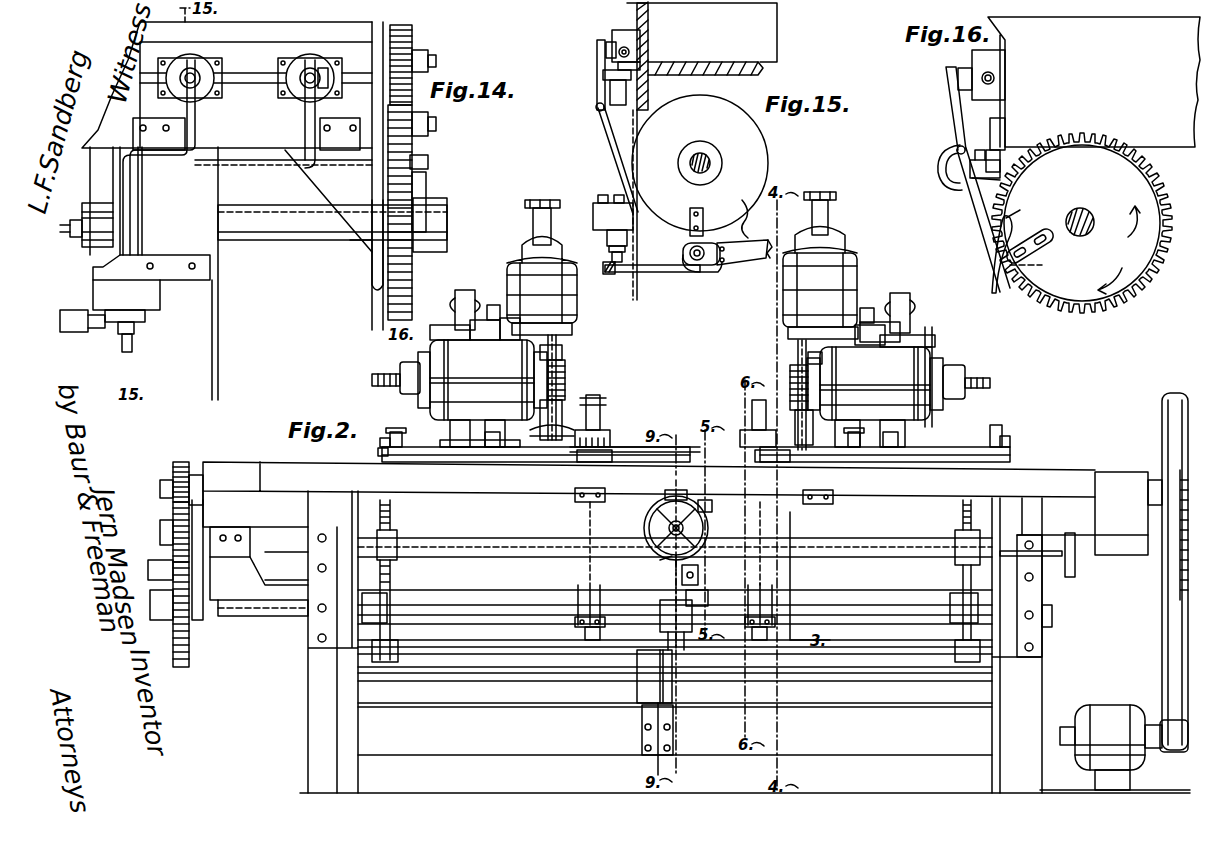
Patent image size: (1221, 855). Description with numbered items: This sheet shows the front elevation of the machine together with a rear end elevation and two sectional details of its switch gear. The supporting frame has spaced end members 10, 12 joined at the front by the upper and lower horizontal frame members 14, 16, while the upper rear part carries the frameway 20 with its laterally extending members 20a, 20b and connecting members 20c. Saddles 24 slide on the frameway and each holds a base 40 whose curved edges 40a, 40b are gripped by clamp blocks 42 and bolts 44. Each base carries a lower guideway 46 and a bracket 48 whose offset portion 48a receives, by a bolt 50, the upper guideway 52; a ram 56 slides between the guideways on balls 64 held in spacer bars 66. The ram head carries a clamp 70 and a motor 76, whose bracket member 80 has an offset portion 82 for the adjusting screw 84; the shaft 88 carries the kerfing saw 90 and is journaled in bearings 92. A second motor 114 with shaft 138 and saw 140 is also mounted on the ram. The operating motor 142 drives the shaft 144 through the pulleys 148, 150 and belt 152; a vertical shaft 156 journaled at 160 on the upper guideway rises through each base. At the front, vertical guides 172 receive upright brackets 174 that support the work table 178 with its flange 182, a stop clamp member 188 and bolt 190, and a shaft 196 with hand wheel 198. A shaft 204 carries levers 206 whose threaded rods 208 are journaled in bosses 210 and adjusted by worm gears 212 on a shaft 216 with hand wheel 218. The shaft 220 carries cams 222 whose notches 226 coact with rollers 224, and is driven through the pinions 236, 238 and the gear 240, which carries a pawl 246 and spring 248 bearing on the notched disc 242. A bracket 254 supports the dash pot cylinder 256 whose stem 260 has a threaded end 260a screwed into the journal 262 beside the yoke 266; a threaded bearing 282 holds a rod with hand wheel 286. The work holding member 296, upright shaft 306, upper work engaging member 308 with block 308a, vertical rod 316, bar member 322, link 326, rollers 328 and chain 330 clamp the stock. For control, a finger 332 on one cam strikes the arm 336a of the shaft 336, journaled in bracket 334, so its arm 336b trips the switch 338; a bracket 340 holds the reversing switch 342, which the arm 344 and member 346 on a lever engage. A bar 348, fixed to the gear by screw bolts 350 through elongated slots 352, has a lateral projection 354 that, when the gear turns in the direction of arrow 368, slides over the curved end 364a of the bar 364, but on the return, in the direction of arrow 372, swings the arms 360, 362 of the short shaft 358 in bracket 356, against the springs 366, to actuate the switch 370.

In FIG. 14, the frame end member 10 is at (128, 336).
In FIG. 2, the frame end member 10 is at (333, 642).
In FIG. 2, the frame end member 12 is at (1017, 645).
In FIG. 2, the upper horizontal frame member 14 is at (828, 567).
In FIG. 2, the lower horizontal frame member 16 is at (745, 748).
In FIG. 14, the frameway 20 is at (300, 120).
In FIG. 15, the frameway 20 is at (648, 84).
In FIG. 16, the frameway 20 is at (1094, 82).
In FIG. 2, the frameway 20 is at (649, 491).
In FIG. 14, the laterally extending member 20a is at (120, 177).
In FIG. 15, the laterally extending member 20a is at (650, 38).
In FIG. 16, the laterally extending member 20a is at (1008, 62).
In FIG. 2, the laterally extending member 20b is at (874, 523).
In FIG. 15, the connecting member 20c is at (722, 68).
In FIG. 2, the saddle 24 is at (410, 470).
In FIG. 2, the base 40 is at (398, 445).
In FIG. 2, the curved edge 40a is at (572, 466).
In FIG. 2, the curved edge 40b is at (378, 452).
In FIG. 2, the clamp block 42 is at (1002, 436).
In FIG. 2, the bolt 44 is at (385, 438).
In FIG. 2, the lower guideway 46 is at (486, 448).
In FIG. 2, the bracket 48 is at (935, 350).
In FIG. 2, the offset portion 48a is at (465, 292).
In FIG. 2, the bolt 50 is at (476, 296).
In FIG. 2, the upper guideway 52 is at (470, 324).
In FIG. 2, the ram 56 is at (470, 346).
In FIG. 2, the ball 64 is at (475, 422).
In FIG. 2, the spacer bar 66 is at (936, 340).
In FIG. 2, the clamp 70 is at (512, 345).
In FIG. 2, the motor 76 is at (578, 290).
In FIG. 2, the bracket member 80 is at (554, 242).
In FIG. 2, the offset portion 82 is at (533, 220).
In FIG. 2, the adjusting screw 84 is at (530, 241).
In FIG. 2, the motor shaft 88 is at (562, 356).
In FIG. 2, the kerfing saw 90 is at (512, 470).
In FIG. 2, the bearing 92 is at (556, 404).
In FIG. 2, the motor 114 is at (568, 372).
In FIG. 2, the motor shaft 138 is at (372, 383).
In FIG. 2, the saw 140 is at (560, 405).
In FIG. 2, the operating motor 142 is at (1115, 747).
In FIG. 14, the shaft 144 is at (436, 66).
In FIG. 2, the shaft 144 is at (200, 476).
In FIG. 2, the pulley 148 is at (1160, 726).
In FIG. 2, the pulley 150 is at (1160, 590).
In FIG. 2, the belt 152 is at (1172, 642).
In FIG. 2, the shaft 156 is at (492, 306).
In FIG. 2, the journal 160 is at (692, 331).
In FIG. 2, the vertical guide 172 is at (320, 578).
In FIG. 2, the upright bracket 174 is at (334, 508).
In FIG. 2, the work table 178 is at (635, 444).
In FIG. 2, the flange 182 is at (665, 500).
In FIG. 2, the clamp member 188 is at (832, 504).
In FIG. 2, the bolt 190 is at (603, 505).
In FIG. 2, the shaft 196 is at (700, 498).
In FIG. 2, the hand wheel 198 is at (708, 528).
In FIG. 2, the shaft 204 is at (520, 681).
In FIG. 15, the lever 206 is at (745, 252).
In FIG. 2, the lever 206 is at (388, 690).
In FIG. 2, the threaded rod 208 is at (420, 628).
In FIG. 2, the boss 210 is at (398, 532).
In FIG. 2, the worm gear 212 is at (392, 542).
In FIG. 2, the shaft 216 is at (455, 553).
In FIG. 2, the hand wheel 218 is at (1075, 568).
In FIG. 14, the shaft 220 is at (447, 225).
In FIG. 15, the shaft 220 is at (702, 160).
In FIG. 16, the shaft 220 is at (1092, 214).
In FIG. 2, the shaft 220 is at (240, 616).
In FIG. 15, the cam 222 is at (700, 163).
In FIG. 2, the cam 222 is at (388, 600).
In FIG. 15, the roller 224 is at (700, 266).
In FIG. 15, the notch 226 is at (746, 212).
In FIG. 14, the pinion 236 is at (436, 126).
In FIG. 2, the pinion 236 is at (172, 508).
In FIG. 14, the pinion 238 is at (414, 40).
In FIG. 2, the pinion 238 is at (178, 464).
In FIG. 14, the gear 240 is at (414, 206).
In FIG. 16, the gear 240 is at (1142, 276).
In FIG. 2, the gear 240 is at (178, 668).
In FIG. 14, the disc 242 is at (416, 188).
In FIG. 2, the disc 242 is at (160, 630).
In FIG. 14, the pawl 246 is at (428, 162).
In FIG. 2, the spring 248 is at (160, 566).
In FIG. 2, the bracket 254 is at (644, 726).
In FIG. 2, the dash pot cylinder 256 is at (645, 692).
In FIG. 2, the stem 260 is at (658, 628).
In FIG. 2, the threaded end 260a is at (672, 560).
In FIG. 2, the journal 262 is at (596, 560).
In FIG. 2, the yoke 266 is at (682, 496).
In FIG. 2, the threaded bearing 282 is at (699, 580).
In FIG. 2, the hand wheel 286 is at (680, 616).
In FIG. 2, the work holding member 296 is at (683, 455).
In FIG. 2, the upright shaft 306 is at (602, 418).
In FIG. 2, the upper work engaging member 308 is at (605, 436).
In FIG. 2, the block 308a is at (742, 440).
In FIG. 14, the vertical rod 316 is at (75, 337).
In FIG. 2, the bar member 322 is at (902, 640).
In FIG. 2, the link 326 is at (582, 598).
In FIG. 2, the roller 328 is at (770, 636).
In FIG. 2, the chain 330 is at (779, 543).
In FIG. 15, the finger 332 is at (690, 218).
In FIG. 14, the bracket 334 is at (159, 134).
In FIG. 15, the bracket 334 is at (603, 126).
In FIG. 14, the shaft 336 is at (205, 166).
In FIG. 14, the downwardly extending arm 336a is at (131, 206).
In FIG. 15, the downwardly extending arm 336a is at (616, 154).
In FIG. 14, the upwardly extending arm 336b is at (196, 120).
In FIG. 15, the upwardly extending arm 336b is at (598, 92).
In FIG. 14, the switch 338 is at (207, 66).
In FIG. 15, the switch 338 is at (612, 38).
In FIG. 14, the bracket 340 is at (158, 297).
In FIG. 15, the bracket 340 is at (613, 212).
In FIG. 14, the reversing switch 342 is at (145, 330).
In FIG. 15, the reversing switch 342 is at (607, 242).
In FIG. 14, the arm 344 is at (132, 352).
In FIG. 15, the arm 344 is at (642, 274).
In FIG. 14, the switch engaging member 346 is at (134, 344).
In FIG. 15, the switch engaging member 346 is at (624, 258).
In FIG. 16, the bar 348 is at (1024, 240).
In FIG. 16, the screw bolt 350 is at (1046, 230).
In FIG. 16, the elongated slot 352 is at (1068, 228).
In FIG. 16, the lateral projection 354 is at (1041, 265).
In FIG. 14, the bracket 356 is at (340, 134).
In FIG. 16, the bracket 356 is at (940, 157).
In FIG. 14, the short shaft 358 is at (300, 168).
In FIG. 14, the downwardly projecting arm 360 is at (352, 232).
In FIG. 16, the downwardly projecting arm 360 is at (990, 235).
In FIG. 14, the upwardly projecting arm 362 is at (316, 66).
In FIG. 16, the upwardly projecting arm 362 is at (950, 116).
In FIG. 14, the bar 364 is at (372, 292).
In FIG. 16, the bar 364 is at (996, 282).
In FIG. 16, the curved end 364a is at (1012, 214).
In FIG. 16, the spring 366 is at (968, 192).
In FIG. 16, the arrow 368 is at (1128, 238).
In FIG. 14, the switch 370 is at (330, 78).
In FIG. 16, the switch 370 is at (957, 76).
In FIG. 16, the arrow 372 is at (1109, 277).